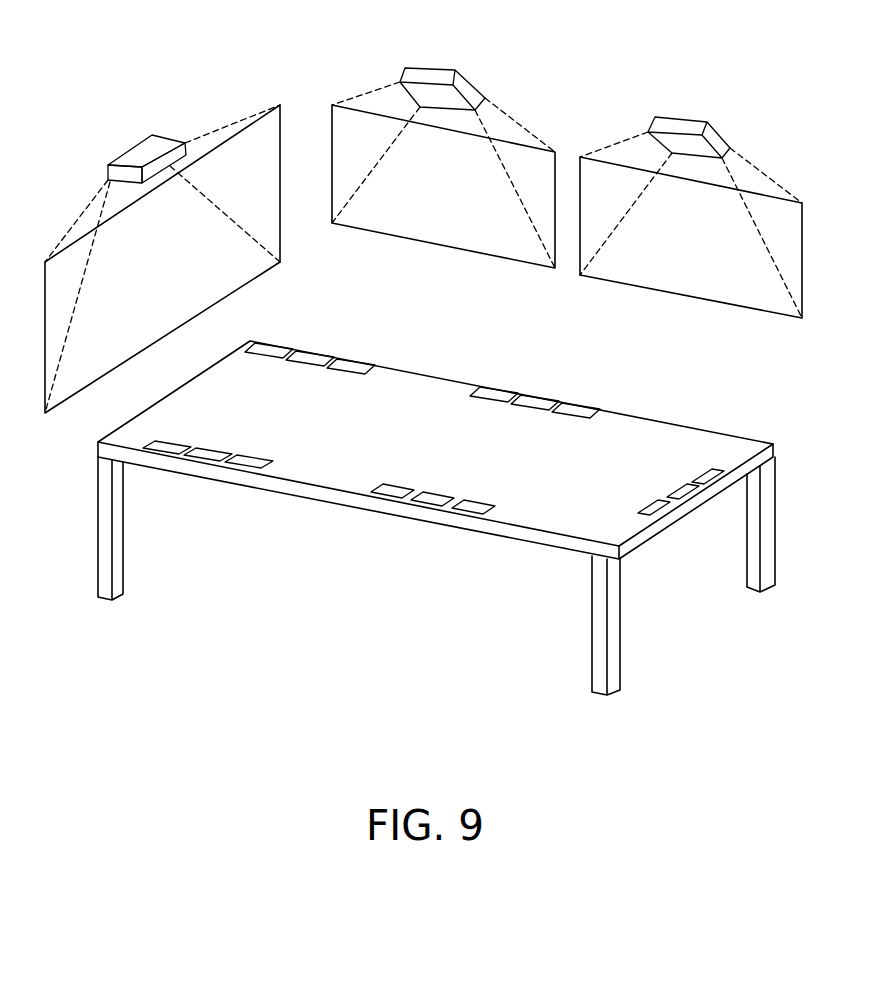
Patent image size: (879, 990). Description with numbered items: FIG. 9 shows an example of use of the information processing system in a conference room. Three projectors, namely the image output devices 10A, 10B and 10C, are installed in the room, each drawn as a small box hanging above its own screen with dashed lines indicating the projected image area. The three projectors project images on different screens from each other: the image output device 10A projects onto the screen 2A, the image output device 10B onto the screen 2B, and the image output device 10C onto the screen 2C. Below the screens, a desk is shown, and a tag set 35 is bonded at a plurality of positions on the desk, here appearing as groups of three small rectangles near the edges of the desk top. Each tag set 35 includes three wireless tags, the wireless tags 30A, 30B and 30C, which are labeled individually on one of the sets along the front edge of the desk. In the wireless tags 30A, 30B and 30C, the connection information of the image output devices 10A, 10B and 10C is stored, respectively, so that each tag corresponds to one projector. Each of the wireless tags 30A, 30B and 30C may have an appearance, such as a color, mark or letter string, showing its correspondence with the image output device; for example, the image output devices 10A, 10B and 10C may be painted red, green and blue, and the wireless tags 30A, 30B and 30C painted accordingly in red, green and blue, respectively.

The screen 2A is at (215, 307).
The screen 2B is at (427, 243).
The screen 2C is at (685, 297).
The image output device 10A is at (163, 140).
The image output device 10B is at (405, 68).
The image output device 10C is at (685, 132).
The wireless tag 30A is at (378, 496).
The wireless tag 30B is at (420, 504).
The wireless tag 30C is at (460, 512).
The tag set 35 is at (273, 323).